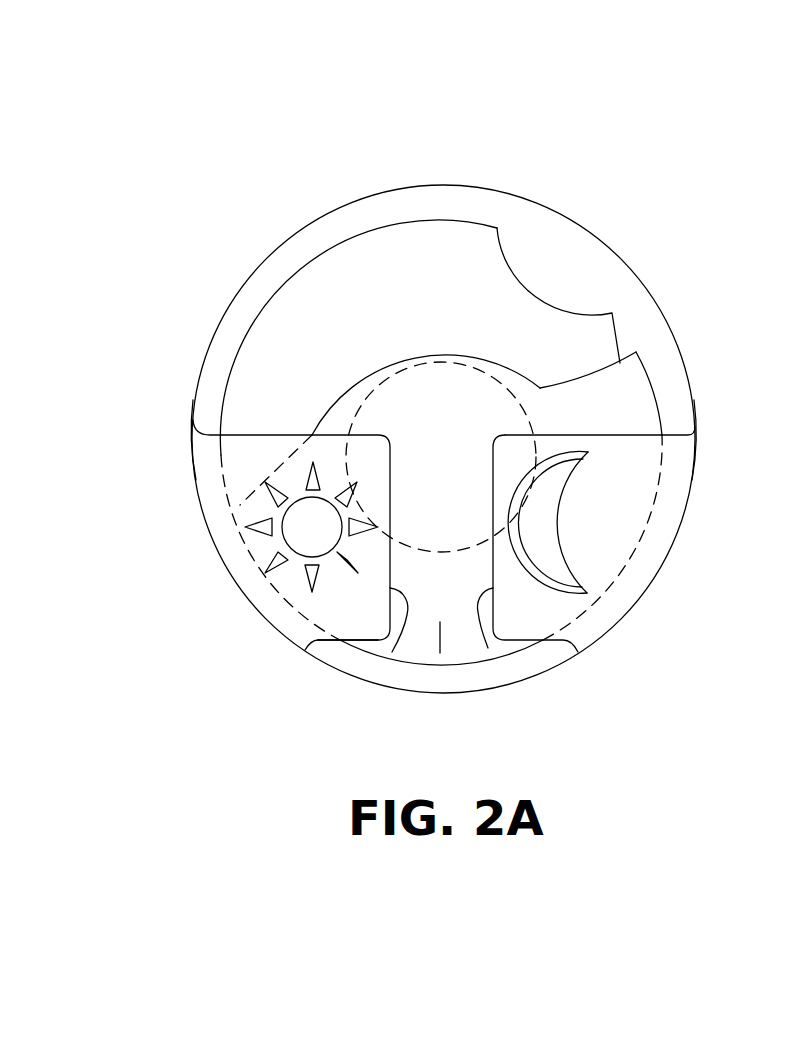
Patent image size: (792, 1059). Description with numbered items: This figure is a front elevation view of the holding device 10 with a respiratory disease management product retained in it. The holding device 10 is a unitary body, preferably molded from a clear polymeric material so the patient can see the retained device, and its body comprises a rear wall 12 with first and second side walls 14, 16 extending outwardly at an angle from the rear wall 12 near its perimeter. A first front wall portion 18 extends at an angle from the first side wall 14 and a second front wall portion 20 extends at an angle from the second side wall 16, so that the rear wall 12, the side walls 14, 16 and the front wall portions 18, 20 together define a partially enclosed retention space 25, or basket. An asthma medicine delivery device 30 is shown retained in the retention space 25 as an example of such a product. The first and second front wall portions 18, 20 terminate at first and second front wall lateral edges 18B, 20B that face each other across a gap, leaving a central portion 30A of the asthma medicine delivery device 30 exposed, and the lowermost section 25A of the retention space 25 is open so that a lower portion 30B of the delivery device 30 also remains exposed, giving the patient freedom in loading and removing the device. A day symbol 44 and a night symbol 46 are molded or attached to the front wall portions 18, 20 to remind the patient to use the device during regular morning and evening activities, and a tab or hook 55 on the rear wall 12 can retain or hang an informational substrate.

The holding device 10 is at (697, 163).
The rear wall 12 is at (293, 236).
The first side wall 14 is at (192, 463).
The second side wall 16 is at (698, 479).
The first front wall portion 18 is at (272, 610).
The first front wall lateral edge 18B is at (394, 652).
The second front wall portion 20 is at (587, 630).
The second front wall lateral edge 20B is at (488, 648).
The retention space 25 is at (280, 367).
The lowermost section of retention space 25A is at (323, 653).
The asthma medicine delivery device 30 is at (355, 232).
The central portion of asthma medicine delivery device 30A is at (420, 445).
The lower portion of asthma medicine delivery device 30B is at (392, 652).
The day symbol 44 is at (290, 537).
The night symbol 46 is at (558, 545).
The tab or hook 55 is at (437, 642).